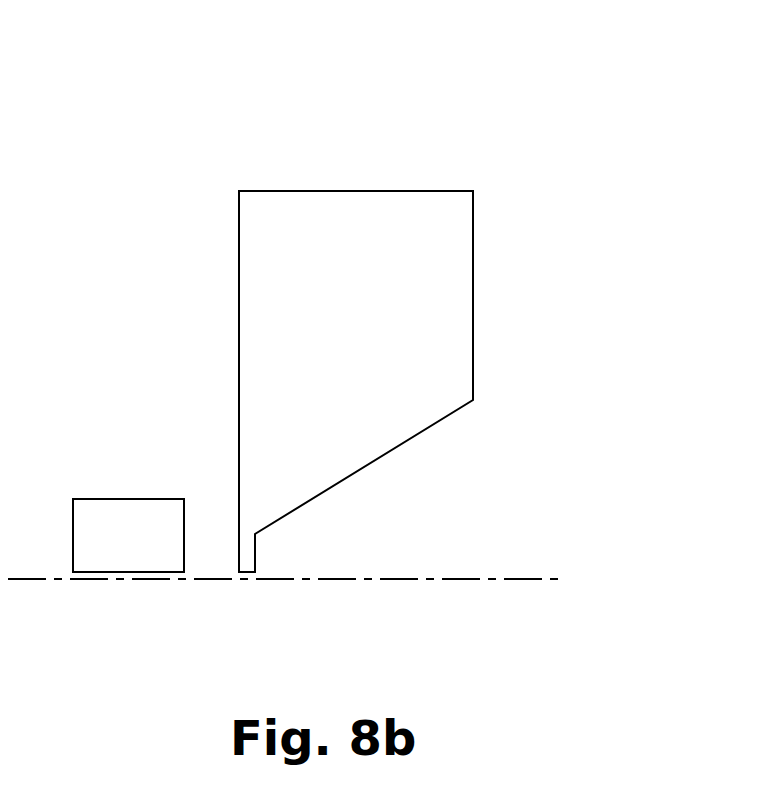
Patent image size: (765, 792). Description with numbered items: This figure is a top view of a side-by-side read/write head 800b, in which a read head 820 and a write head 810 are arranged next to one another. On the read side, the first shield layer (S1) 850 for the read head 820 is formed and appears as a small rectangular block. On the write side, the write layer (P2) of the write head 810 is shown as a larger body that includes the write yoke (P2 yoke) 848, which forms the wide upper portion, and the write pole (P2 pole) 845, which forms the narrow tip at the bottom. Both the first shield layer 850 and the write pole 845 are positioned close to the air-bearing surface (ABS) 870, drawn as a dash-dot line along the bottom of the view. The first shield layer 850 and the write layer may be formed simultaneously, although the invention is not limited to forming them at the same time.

The side-by-side read/write head 800b is at (575, 212).
The write head 810 is at (395, 152).
The write yoke (P2 yoke) 848 is at (280, 205).
The write pole (P2 pole) 845 is at (245, 557).
The read head 820 is at (134, 494).
The first shield layer (S1) 850 is at (93, 497).
The air-bearing surface (ABS) 870 is at (573, 592).